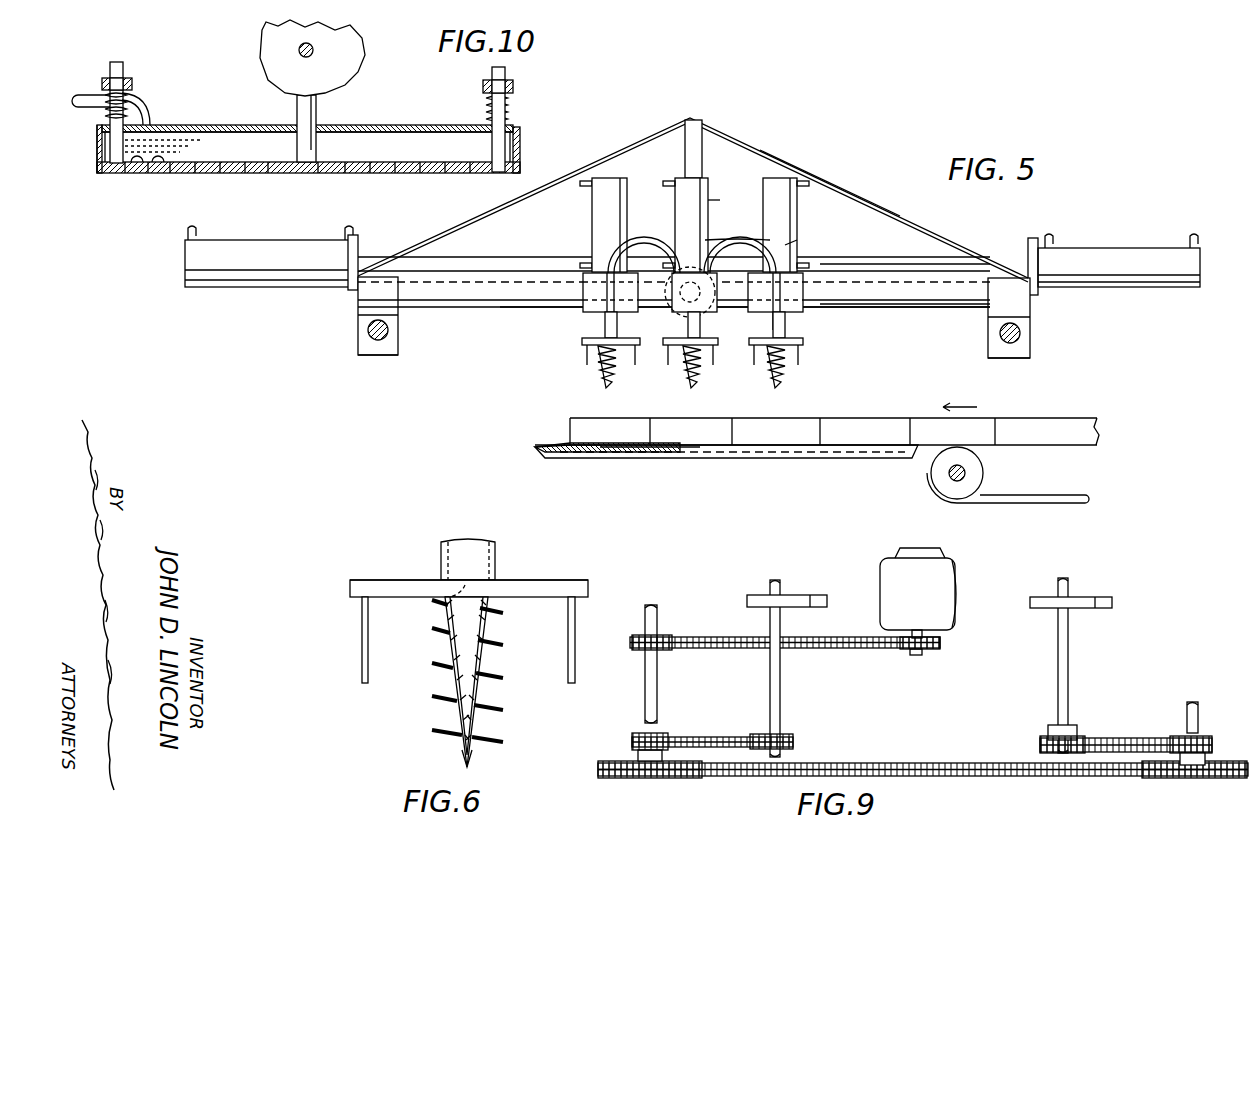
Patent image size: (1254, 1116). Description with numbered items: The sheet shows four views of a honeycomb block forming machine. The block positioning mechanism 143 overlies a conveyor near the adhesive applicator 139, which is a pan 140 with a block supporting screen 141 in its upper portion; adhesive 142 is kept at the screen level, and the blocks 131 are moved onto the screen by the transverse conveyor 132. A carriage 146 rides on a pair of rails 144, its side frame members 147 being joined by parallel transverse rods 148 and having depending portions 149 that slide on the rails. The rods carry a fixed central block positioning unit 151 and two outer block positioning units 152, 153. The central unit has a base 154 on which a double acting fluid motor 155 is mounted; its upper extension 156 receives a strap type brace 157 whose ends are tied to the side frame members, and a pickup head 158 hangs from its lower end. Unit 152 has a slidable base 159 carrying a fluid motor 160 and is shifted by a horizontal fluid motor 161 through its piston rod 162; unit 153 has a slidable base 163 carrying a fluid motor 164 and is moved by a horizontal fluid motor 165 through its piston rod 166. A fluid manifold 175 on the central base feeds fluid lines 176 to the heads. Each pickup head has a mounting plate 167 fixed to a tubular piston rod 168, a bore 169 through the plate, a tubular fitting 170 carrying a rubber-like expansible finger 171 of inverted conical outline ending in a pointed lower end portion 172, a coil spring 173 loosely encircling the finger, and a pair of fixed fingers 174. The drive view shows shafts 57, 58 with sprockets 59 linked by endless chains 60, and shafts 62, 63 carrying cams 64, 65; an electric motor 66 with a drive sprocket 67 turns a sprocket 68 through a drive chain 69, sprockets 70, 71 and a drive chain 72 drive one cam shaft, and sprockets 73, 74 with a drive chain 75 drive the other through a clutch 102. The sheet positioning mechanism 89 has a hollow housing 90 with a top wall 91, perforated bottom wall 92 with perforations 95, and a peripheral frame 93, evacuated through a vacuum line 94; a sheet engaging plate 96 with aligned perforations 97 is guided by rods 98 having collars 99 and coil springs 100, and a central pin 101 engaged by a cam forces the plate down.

In FIG. 9, the shaft 57 is at (1200, 712).
In FIG. 9, the shaft 58 is at (660, 698).
In FIG. 9, the sprockets 59 is at (625, 778).
In FIG. 9, the endless chains 60 is at (838, 762).
In FIG. 10, the shaft 62 is at (312, 56).
In FIG. 9, the shaft 62 is at (1070, 693).
In FIG. 9, the shaft 63 is at (780, 684).
In FIG. 10, the cam 64 is at (362, 65).
In FIG. 9, the cam 64 is at (1083, 597).
In FIG. 9, the cam 65 is at (793, 595).
In FIG. 9, the electric motor 66 is at (950, 568).
In FIG. 9, the drive sprocket 67 is at (938, 650).
In FIG. 9, the sprocket 68 is at (665, 637).
In FIG. 9, the drive chain 69 is at (857, 650).
In FIG. 9, the sprocket 70 is at (640, 735).
In FIG. 9, the sprocket 71 is at (785, 734).
In FIG. 9, the drive chain 72 is at (708, 737).
In FIG. 9, the sprocket 73 is at (1182, 737).
In FIG. 9, the sprocket 74 is at (1080, 738).
In FIG. 9, the drive chain 75 is at (1125, 738).
In FIG. 10, the sheet positioning mechanism 89 is at (536, 126).
In FIG. 10, the housing 90 is at (399, 123).
In FIG. 10, the top wall 91 is at (272, 125).
In FIG. 10, the bottom wall 92 is at (222, 162).
In FIG. 10, the peripheral frame 93 is at (96, 148).
In FIG. 10, the vacuum line 94 is at (150, 100).
In FIG. 10, the perforations 95 is at (140, 168).
In FIG. 10, the sheet engaging plate 96 is at (384, 173).
In FIG. 10, the perforations 97 is at (200, 173).
In FIG. 10, the rods 98 is at (120, 62).
In FIG. 10, the collars 99 is at (130, 85).
In FIG. 10, the coil springs 100 is at (132, 115).
In FIG. 10, the pin 101 is at (316, 112).
In FIG. 9, the clutch 102 is at (1048, 732).
In FIG. 5, the blocks 131 is at (646, 425).
In FIG. 5, the transverse conveyor 132 is at (1013, 503).
In FIG. 5, the adhesive applicator 139 is at (754, 467).
In FIG. 5, the pan 140 is at (590, 458).
In FIG. 5, the block supporting screen 141 is at (550, 443).
In FIG. 5, the adhesive 142 is at (650, 458).
In FIG. 5, the block positioning mechanism 143 is at (860, 176).
In FIG. 5, the rails 144 is at (390, 333).
In FIG. 5, the carriage 146 is at (974, 322).
In FIG. 5, the side frame members 147 is at (355, 302).
In FIG. 5, the transverse rods 148 is at (915, 305).
In FIG. 5, the depending portions 149 is at (388, 356).
In FIG. 5, the central block positioning unit 151 is at (719, 214).
In FIG. 5, the outer block positioning unit 152 is at (647, 201).
In FIG. 5, the outer block positioning unit 153 is at (808, 235).
In FIG. 5, the base 154 is at (720, 255).
In FIG. 5, the extensible fluid motor 155 is at (710, 192).
In FIG. 5, the extension 156 is at (700, 145).
In FIG. 5, the strap type brace 157 is at (782, 150).
In FIG. 5, the pickup head 158 is at (631, 343).
In FIG. 6, the pickup head 158 is at (513, 568).
In FIG. 5, the base 159 is at (580, 310).
In FIG. 5, the fluid motor 160 is at (590, 218).
In FIG. 5, the fluid motor 161 is at (232, 288).
In FIG. 5, the piston rod 162 is at (514, 262).
In FIG. 5, the base 163 is at (805, 288).
In FIG. 5, the fluid motor 164 is at (800, 248).
In FIG. 5, the fluid motor 165 is at (1092, 252).
In FIG. 5, the piston rod 166 is at (890, 268).
In FIG. 6, the mounting plate 167 is at (575, 578).
In FIG. 6, the piston rod 168 is at (498, 542).
In FIG. 6, the bore 169 is at (448, 590).
In FIG. 6, the tubular fitting 170 is at (440, 630).
In FIG. 6, the expansible finger 171 is at (492, 667).
In FIG. 6, the pointed lower end portion 172 is at (470, 766).
In FIG. 6, the coil spring 173 is at (500, 645).
In FIG. 6, the fixed fingers 174 is at (360, 635).
In FIG. 5, the fluid manifold 175 is at (675, 283).
In FIG. 5, the fluid lines 176 is at (645, 242).